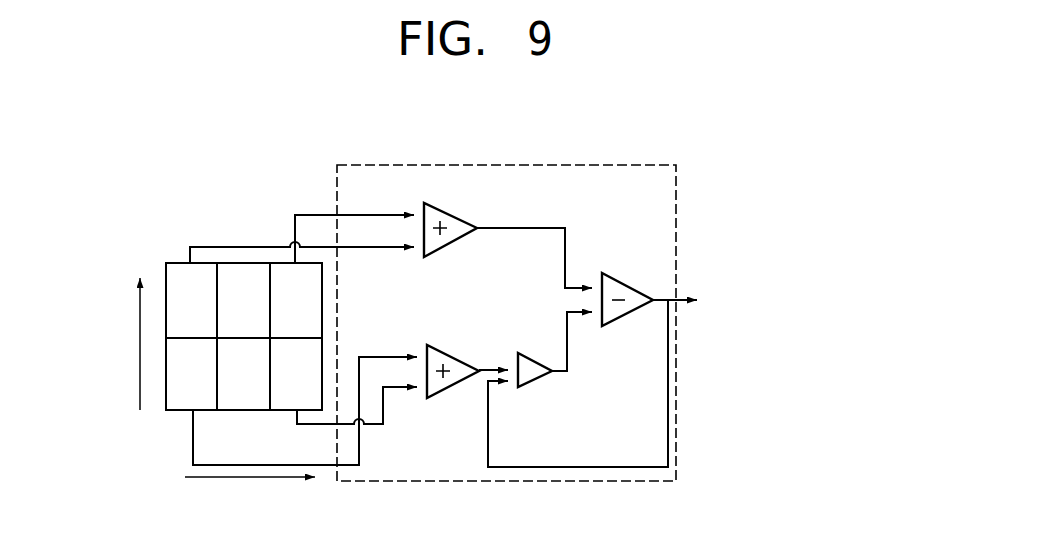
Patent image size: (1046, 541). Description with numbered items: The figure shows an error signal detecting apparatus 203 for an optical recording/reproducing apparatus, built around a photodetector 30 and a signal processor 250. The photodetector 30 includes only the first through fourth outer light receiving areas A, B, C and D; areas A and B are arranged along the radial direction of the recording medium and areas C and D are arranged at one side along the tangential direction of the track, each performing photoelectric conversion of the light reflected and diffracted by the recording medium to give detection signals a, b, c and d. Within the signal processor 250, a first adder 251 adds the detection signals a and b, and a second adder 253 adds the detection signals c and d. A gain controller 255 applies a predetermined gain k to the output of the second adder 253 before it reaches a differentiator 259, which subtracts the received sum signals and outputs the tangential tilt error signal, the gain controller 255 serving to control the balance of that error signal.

The error signal detecting apparatus 203 is at (731, 91).
The photodetector 30 is at (161, 259).
The signal processor 250 is at (608, 163).
The first adder 251 is at (447, 244).
The second adder 253 is at (454, 355).
The gain controller 255 is at (533, 388).
The differentiator 259 is at (622, 273).